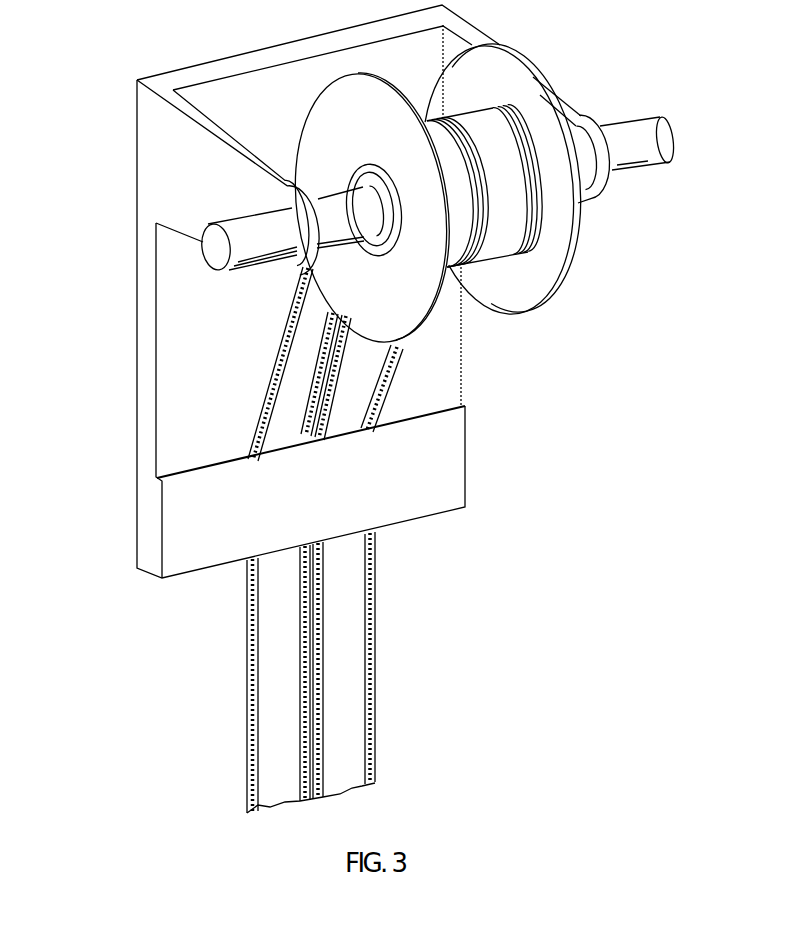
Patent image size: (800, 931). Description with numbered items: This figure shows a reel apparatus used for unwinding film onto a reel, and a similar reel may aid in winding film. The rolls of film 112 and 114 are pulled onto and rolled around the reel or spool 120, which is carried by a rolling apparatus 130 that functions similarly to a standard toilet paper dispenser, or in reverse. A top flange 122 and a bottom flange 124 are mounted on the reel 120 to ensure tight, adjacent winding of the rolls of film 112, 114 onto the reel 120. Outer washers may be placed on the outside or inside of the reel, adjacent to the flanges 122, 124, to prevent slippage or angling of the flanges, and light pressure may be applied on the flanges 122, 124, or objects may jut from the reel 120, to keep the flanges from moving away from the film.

The roll of film 112 is at (272, 685).
The roll of film 114 is at (350, 708).
The reel 120 is at (650, 138).
The top flange 122 is at (428, 307).
The bottom flange 124 is at (575, 252).
The rolling apparatus 130 is at (183, 373).